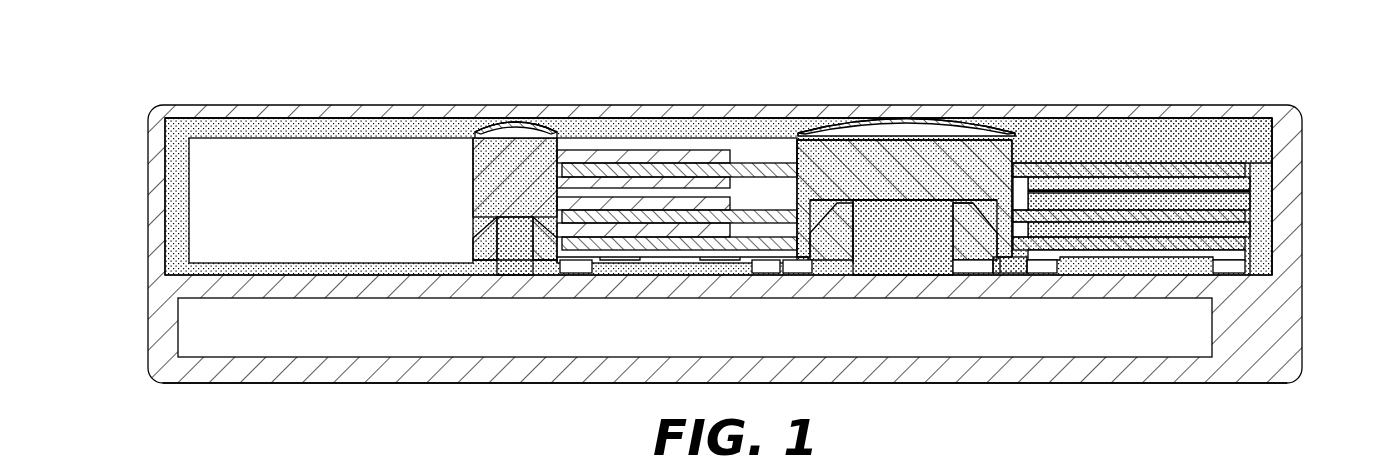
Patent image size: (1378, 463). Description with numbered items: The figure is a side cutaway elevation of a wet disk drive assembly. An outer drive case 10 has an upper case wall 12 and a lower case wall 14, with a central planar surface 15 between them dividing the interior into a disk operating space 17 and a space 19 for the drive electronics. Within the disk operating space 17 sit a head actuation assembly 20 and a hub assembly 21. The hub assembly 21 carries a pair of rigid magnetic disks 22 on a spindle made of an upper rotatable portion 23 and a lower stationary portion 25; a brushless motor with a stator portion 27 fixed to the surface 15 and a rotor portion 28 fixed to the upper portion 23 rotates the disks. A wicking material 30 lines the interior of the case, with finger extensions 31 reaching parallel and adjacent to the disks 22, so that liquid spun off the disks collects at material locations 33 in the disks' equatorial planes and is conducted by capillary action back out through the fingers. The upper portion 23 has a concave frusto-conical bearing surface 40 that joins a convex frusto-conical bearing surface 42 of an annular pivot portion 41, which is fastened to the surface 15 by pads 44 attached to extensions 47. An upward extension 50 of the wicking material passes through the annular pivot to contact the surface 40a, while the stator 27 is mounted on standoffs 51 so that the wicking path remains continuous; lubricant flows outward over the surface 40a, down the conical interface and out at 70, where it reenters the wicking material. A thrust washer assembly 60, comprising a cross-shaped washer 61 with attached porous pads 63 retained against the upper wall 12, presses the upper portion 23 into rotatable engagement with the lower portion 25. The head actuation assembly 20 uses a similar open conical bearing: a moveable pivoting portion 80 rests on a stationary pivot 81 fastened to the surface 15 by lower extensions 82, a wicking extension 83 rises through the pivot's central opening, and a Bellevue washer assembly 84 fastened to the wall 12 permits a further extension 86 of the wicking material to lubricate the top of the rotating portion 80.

The outer drive case 10 is at (1131, 93).
The upper case wall 12 is at (567, 105).
The lower case wall 14 is at (507, 383).
The central planar surface 15 is at (198, 283).
The disk operating space 17 is at (358, 212).
The electronics space 19 is at (350, 344).
The head actuation assembly 20 is at (484, 201).
The hub assembly 21 is at (782, 138).
The rigid magnetic disks 22 is at (677, 243).
The upper rotatable spindle portion 23 is at (1013, 160).
The lower stationary spindle portion 25 is at (855, 205).
The stator portion 27 is at (747, 263).
The rotor portion 28 is at (627, 246).
The wicking material 30 is at (1260, 123).
The finger extensions 31 is at (1243, 157).
The material locations 33 is at (1263, 168).
The concave frusto-conical bearing surface 40 is at (910, 198).
The upper bearing surface 40a is at (892, 139).
The annular pivot portion 41 is at (976, 199).
The convex frusto-conical bearing surface 42 is at (985, 263).
The pads 44 is at (857, 254).
The extensions of the central surface 47 is at (840, 258).
The upward extension of wicking material 50 is at (903, 269).
The standoffs 51 is at (578, 266).
The thrust washer assembly 60 is at (921, 77).
The thrust washer 61 is at (958, 122).
The porous ceramic pads 63 is at (828, 124).
The bottom of bearing interface 70 is at (807, 263).
The moveable pivoting portion 80 is at (473, 205).
The stationary pivot 81 is at (478, 252).
The lower extensions 82 is at (483, 256).
The wicking material extension 83 is at (513, 262).
The Bellevue washer assembly 84 is at (501, 93).
The wicking material extension 86 is at (498, 133).